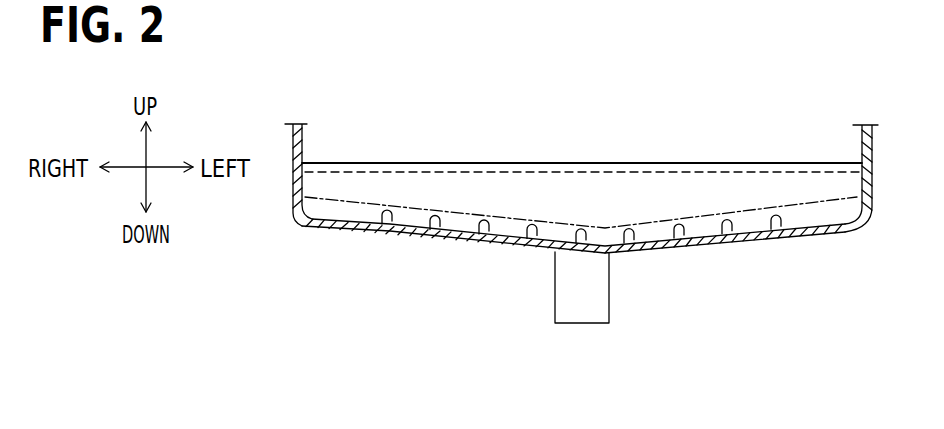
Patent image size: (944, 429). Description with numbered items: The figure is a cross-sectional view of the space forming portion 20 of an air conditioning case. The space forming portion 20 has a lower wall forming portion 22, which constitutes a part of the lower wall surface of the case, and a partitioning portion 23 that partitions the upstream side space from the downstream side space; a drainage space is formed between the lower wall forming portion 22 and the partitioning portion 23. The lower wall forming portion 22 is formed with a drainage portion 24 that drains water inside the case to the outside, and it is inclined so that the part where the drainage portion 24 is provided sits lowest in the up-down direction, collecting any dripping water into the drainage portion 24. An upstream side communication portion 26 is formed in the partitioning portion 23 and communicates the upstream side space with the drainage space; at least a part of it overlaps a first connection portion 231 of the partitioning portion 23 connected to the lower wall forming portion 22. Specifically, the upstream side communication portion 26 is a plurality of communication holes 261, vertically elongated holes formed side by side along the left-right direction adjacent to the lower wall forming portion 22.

The space forming portion 20 is at (393, 135).
The lower wall forming portion 22 is at (810, 236).
The partitioning portion 23 is at (775, 163).
The first connection portion 231 is at (650, 227).
The drainage portion 24 is at (568, 323).
The upstream side communication portion 26 is at (370, 216).
The communication holes 261 is at (385, 227).